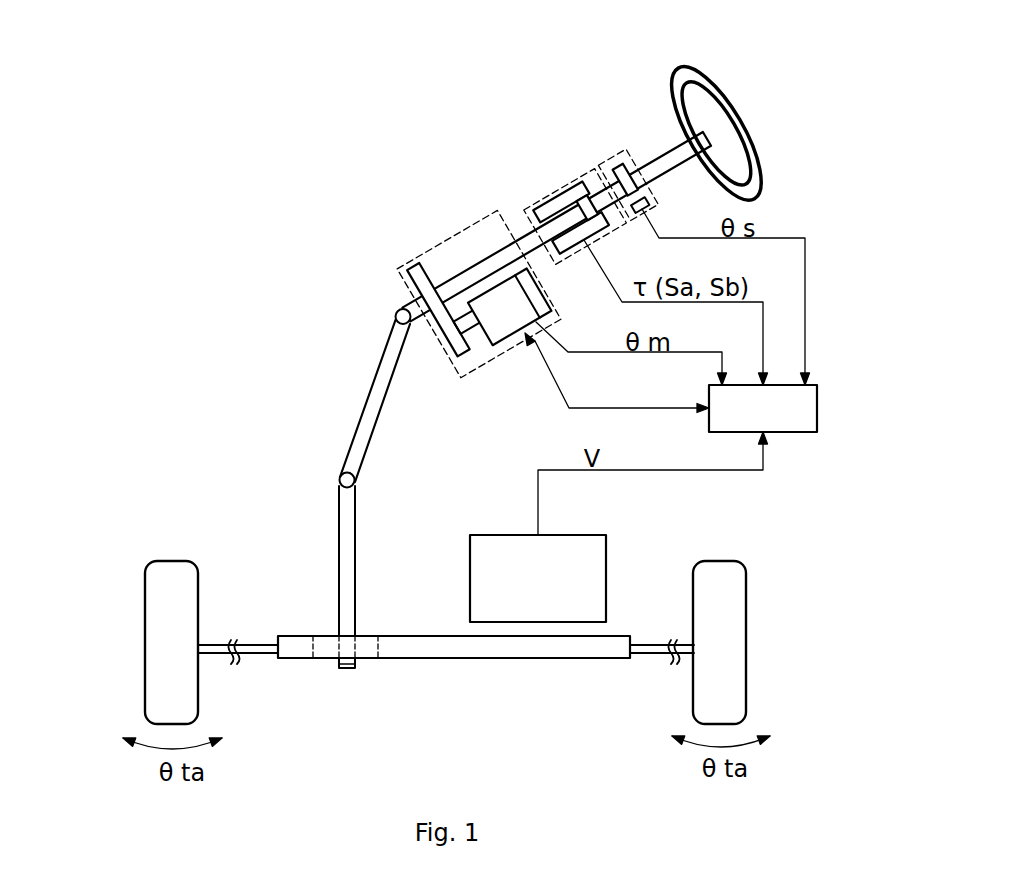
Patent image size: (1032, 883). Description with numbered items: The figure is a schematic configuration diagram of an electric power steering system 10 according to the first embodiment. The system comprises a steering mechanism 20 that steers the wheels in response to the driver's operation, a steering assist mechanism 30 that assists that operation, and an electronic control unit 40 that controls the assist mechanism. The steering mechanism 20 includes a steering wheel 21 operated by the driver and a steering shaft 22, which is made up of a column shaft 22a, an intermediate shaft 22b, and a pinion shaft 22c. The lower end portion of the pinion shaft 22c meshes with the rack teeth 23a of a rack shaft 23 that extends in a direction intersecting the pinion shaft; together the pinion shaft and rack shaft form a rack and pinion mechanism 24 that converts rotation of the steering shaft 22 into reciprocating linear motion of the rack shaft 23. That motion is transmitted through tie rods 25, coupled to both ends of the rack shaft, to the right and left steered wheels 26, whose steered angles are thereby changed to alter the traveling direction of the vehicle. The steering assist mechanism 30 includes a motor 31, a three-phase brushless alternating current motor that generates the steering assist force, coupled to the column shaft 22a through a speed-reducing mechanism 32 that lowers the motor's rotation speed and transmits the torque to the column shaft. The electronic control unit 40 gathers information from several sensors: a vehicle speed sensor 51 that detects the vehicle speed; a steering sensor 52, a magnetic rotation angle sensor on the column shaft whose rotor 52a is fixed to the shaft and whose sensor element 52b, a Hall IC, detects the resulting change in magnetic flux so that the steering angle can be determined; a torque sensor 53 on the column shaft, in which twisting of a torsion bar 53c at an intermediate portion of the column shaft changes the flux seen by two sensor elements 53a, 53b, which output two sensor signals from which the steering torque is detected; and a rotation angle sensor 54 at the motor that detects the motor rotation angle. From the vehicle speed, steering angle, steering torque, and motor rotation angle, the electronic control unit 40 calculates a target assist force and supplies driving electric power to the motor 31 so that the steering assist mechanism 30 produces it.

The electric power steering system 10 is at (800, 72).
The steering mechanism 20 is at (767, 137).
The steering wheel 21 is at (716, 86).
The steering shaft 22 is at (312, 316).
The column shaft 22a is at (392, 315).
The intermediate shaft 22b is at (367, 385).
The pinion shaft 22c is at (335, 492).
The rack shaft 23 is at (421, 637).
The rack teeth 23a is at (371, 648).
The rack and pinion mechanism 24 is at (330, 632).
The tie rod 25 is at (252, 656).
The steered wheel 26 is at (145, 695).
The steering assist mechanism 30 is at (455, 237).
The motor 31 is at (488, 347).
The speed-reducing mechanism 32 is at (448, 349).
The electronic control unit 40 is at (819, 398).
The vehicle speed sensor 51 is at (497, 535).
The steering sensor 52 is at (617, 158).
The rotor 52a is at (613, 167).
The sensor element 52b is at (652, 205).
The torque sensor 53 is at (618, 229).
The sensor element 53a is at (553, 200).
The sensor element 53b is at (565, 248).
The torsion bar 53c is at (574, 213).
The rotation angle sensor 54 is at (561, 313).